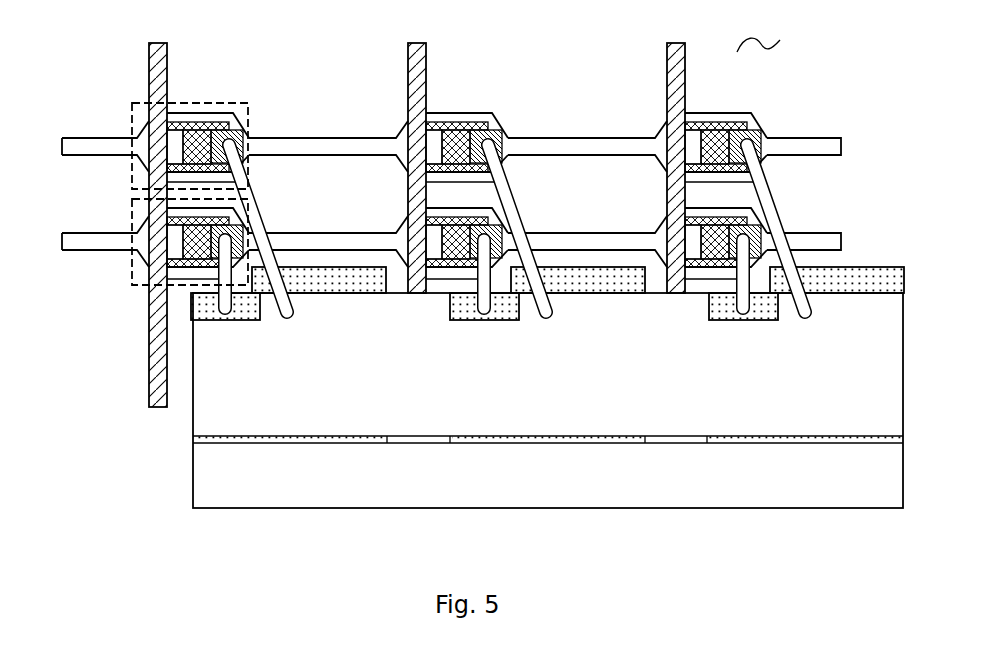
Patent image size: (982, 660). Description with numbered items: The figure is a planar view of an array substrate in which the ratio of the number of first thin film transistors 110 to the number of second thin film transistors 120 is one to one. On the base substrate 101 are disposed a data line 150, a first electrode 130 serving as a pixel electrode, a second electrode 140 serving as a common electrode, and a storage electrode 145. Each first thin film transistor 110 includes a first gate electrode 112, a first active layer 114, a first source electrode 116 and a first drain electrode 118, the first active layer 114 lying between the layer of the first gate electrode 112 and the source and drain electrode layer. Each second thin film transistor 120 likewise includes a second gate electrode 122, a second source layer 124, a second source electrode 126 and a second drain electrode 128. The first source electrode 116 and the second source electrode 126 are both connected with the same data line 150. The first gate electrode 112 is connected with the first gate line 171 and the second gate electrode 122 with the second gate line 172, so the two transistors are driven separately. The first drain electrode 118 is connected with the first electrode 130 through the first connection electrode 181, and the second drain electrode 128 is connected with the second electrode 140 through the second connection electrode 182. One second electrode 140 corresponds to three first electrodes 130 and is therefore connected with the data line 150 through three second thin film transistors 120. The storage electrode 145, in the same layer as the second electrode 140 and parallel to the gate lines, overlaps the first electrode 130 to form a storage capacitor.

The base substrate 101 is at (777, 43).
The first thin film transistor 110 is at (200, 104).
The first gate electrode 112 is at (232, 120).
The first active layer 114 is at (210, 124).
The first source electrode 116 is at (175, 153).
The first drain electrode 118 is at (247, 135).
The second thin film transistor 120 is at (132, 223).
The second gate electrode 122 is at (233, 213).
The second source layer 124 is at (193, 267).
The second source electrode 126 is at (173, 243).
The second drain electrode 128 is at (227, 237).
The first electrode 130 is at (300, 267).
The second electrode 140 is at (303, 313).
The storage electrode 145 is at (377, 480).
The data line 150 is at (155, 78).
The first gate line 171 is at (809, 147).
The second gate line 172 is at (819, 242).
The first connection electrode 181 is at (227, 300).
The second connection electrode 182 is at (288, 310).